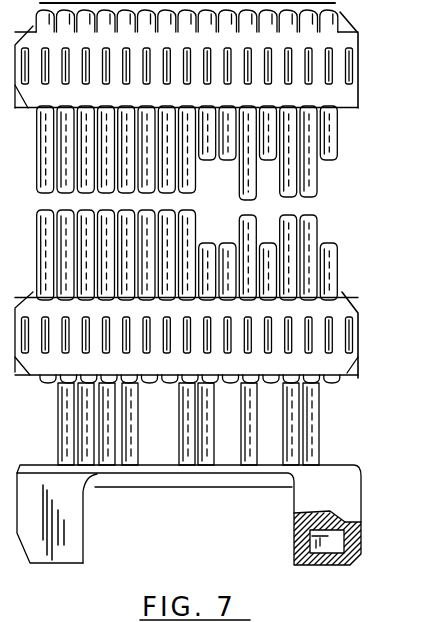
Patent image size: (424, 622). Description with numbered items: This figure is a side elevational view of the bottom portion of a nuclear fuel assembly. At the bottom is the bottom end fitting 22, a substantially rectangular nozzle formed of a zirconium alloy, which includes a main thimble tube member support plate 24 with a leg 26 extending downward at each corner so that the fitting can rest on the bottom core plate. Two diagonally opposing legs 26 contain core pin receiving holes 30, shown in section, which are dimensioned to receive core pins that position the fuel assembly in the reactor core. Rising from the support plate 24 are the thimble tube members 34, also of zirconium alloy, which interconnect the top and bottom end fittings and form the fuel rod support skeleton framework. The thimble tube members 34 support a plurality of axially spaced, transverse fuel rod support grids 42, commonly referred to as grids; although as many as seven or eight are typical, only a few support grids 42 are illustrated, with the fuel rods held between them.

The fuel rod support grid 42 is at (355, 82).
The thimble tube member 34 is at (307, 417).
The main thimble tube member support plate 24 is at (208, 514).
The leg 26 is at (16, 537).
The bottom end fitting 22 is at (360, 532).
The core pin receiving hole 30 is at (296, 542).